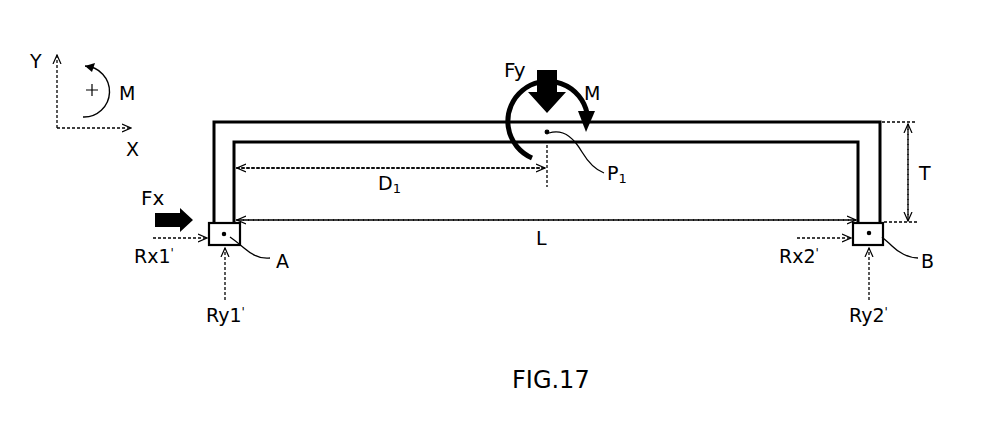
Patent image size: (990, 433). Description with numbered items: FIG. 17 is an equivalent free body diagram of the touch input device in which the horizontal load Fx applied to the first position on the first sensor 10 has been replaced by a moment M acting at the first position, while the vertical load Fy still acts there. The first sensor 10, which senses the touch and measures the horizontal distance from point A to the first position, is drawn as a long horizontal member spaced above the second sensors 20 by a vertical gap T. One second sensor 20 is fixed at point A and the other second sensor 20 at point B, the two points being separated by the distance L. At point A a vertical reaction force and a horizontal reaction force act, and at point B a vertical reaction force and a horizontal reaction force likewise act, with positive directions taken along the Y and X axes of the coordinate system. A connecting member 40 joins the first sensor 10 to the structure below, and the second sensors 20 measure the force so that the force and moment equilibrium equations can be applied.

The first sensor 10 is at (760, 130).
The second sensor 20 is at (217, 243).
The connecting member 40 is at (868, 177).